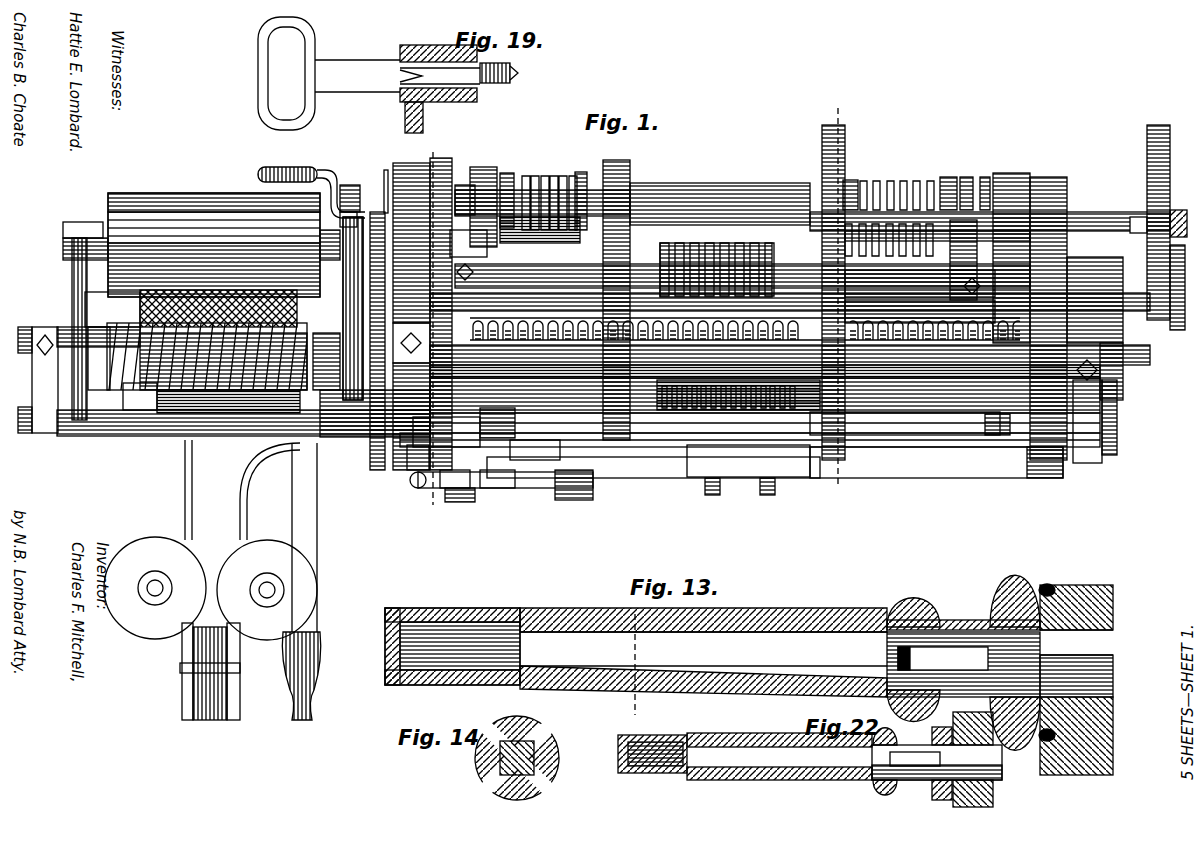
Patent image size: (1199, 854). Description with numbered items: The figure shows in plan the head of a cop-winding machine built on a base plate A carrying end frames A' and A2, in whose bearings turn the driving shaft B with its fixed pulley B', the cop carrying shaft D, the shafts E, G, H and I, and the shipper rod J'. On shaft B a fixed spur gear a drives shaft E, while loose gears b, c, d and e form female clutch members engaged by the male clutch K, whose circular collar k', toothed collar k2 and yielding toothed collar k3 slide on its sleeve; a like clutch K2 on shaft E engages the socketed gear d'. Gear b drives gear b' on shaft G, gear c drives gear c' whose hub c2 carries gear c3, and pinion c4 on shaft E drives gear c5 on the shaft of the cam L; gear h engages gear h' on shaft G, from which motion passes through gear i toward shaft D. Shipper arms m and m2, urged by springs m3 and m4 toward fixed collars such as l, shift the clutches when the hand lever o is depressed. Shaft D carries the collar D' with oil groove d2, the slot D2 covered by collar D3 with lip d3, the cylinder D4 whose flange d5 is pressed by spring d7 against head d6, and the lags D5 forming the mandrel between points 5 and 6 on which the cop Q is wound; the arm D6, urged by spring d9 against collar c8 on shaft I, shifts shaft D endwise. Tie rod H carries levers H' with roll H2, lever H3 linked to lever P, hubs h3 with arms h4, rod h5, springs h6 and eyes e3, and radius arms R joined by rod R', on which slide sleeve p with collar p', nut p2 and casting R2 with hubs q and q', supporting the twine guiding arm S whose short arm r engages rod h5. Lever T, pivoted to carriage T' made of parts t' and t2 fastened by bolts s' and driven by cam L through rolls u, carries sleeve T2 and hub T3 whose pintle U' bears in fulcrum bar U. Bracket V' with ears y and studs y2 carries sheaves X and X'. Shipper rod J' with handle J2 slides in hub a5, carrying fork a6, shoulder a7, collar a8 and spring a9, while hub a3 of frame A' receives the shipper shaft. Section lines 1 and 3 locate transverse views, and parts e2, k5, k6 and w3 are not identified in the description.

In FIG. 1, the base plate A is at (936, 462).
In FIG. 19, the end frame A' is at (425, 82).
In FIG. 1, the end frame A' is at (422, 314).
In FIG. 13, the end frame A' is at (1076, 672).
In FIG. 22, the end frame A' is at (990, 759).
In FIG. 1, the end frame A2 is at (1048, 318).
In FIG. 1, the driving shaft B is at (840, 189).
In FIG. 1, the pulley B' is at (1145, 222).
In FIG. 1, the spur gear wheel c is at (1011, 249).
In FIG. 1, the cop carrying shaft D is at (1057, 368).
In FIG. 13, the cop carrying shaft D is at (703, 652).
In FIG. 14, the cop carrying shaft D is at (545, 758).
In FIG. 1, the collar D' is at (411, 332).
In FIG. 13, the collar D' is at (1015, 655).
In FIG. 22, the collar D' is at (971, 721).
In FIG. 13, the slot D2 is at (943, 658).
In FIG. 22, the slot D2 is at (925, 767).
In FIG. 13, the collar D3 is at (913, 641).
In FIG. 13, the cylinder D4 is at (452, 634).
In FIG. 22, the cylinder D4 is at (652, 739).
In FIG. 13, the lags D5 is at (760, 690).
In FIG. 14, the lags D5 is at (490, 768).
In FIG. 22, the lags D5 is at (779, 768).
In FIG. 1, the arm D6 is at (647, 418).
In FIG. 1, the shaft E is at (889, 249).
In FIG. 1, the shaft G is at (920, 311).
In FIG. 1, the tie rod H is at (765, 369).
In FIG. 1, the two-armed levers H' is at (189, 321).
In FIG. 1, the light roll H2 is at (214, 245).
In FIG. 1, the lever H3 is at (358, 308).
In FIG. 1, the shaft I is at (905, 423).
In FIG. 19, the shipper rod J' is at (506, 72).
In FIG. 1, the shipper rod J' is at (719, 203).
In FIG. 19, the looped handle J2 is at (369, 73).
In FIG. 1, the looped handle J2 is at (311, 181).
In FIG. 1, the male clutch portion K is at (728, 190).
In FIG. 1, the male clutch portion K2 is at (770, 245).
In FIG. 1, the cam L is at (737, 458).
In FIG. 1, the lever P is at (387, 183).
In FIG. 1, the partly finished cop Q is at (208, 308).
In FIG. 1, the radius arm R is at (560, 395).
In FIG. 1, the rod R' is at (750, 451).
In FIG. 1, the casting R2 is at (472, 429).
In FIG. 1, the twine guiding and delivering arm S is at (243, 434).
In FIG. 1, the cylindrical lever T is at (498, 491).
In FIG. 1, the reciprocating carriage T' is at (748, 461).
In FIG. 1, the sleeve T2 is at (558, 497).
In FIG. 1, the hub T3 is at (477, 497).
In FIG. 1, the vertical fulcrum bar U is at (631, 435).
In FIG. 1, the pintle U' is at (497, 421).
In FIG. 1, the bracket V' is at (285, 490).
In FIG. 1, the sheave X is at (215, 674).
In FIG. 1, the sheave X' is at (210, 588).
In FIG. 1, the spur gear wheel a is at (822, 292).
In FIG. 1, the chambered hub a3 is at (738, 402).
In FIG. 19, the hub a5 is at (462, 102).
In FIG. 1, the hub a5 is at (460, 200).
In FIG. 1, the shipper fork a6 is at (1135, 318).
In FIG. 19, the shoulder a7 is at (400, 100).
In FIG. 1, the shoulder a7 is at (611, 418).
In FIG. 1, the collar a8 is at (568, 255).
In FIG. 1, the spring a9 is at (540, 241).
In FIG. 1, the spur gear wheel b is at (860, 134).
In FIG. 1, the gear wheel b' is at (831, 311).
In FIG. 1, the gear c' is at (786, 286).
In FIG. 1, the sleeve-like hub c2 is at (588, 420).
In FIG. 1, the gear wheel c3 is at (1112, 262).
In FIG. 1, the pinion c4 is at (721, 324).
In FIG. 1, the gear wheel c5 is at (984, 424).
In FIG. 1, the collar c8 is at (832, 420).
In FIG. 1, the spur gear wheel d is at (619, 290).
In FIG. 1, the gear d' is at (680, 173).
In FIG. 13, the annular groove d2 is at (1035, 755).
In FIG. 13, the annular lip d3 is at (866, 620).
In FIG. 13, the annular flange d5 is at (496, 696).
In FIG. 22, the annular flange d5 is at (669, 791).
In FIG. 13, the head d6 is at (379, 608).
In FIG. 22, the head d6 is at (602, 740).
In FIG. 13, the coiled spring d7 is at (424, 696).
In FIG. 22, the coiled spring d7 is at (629, 788).
In FIG. 13, the spring d9 is at (955, 620).
In FIG. 22, the spring d9 is at (872, 768).
In FIG. 1, the spur gear wheel e is at (474, 194).
In FIG. 1, the pin e2 is at (322, 395).
In FIG. 1, the eye e3 is at (212, 447).
In FIG. 1, the gear h is at (1136, 410).
In FIG. 1, the gear h' is at (76, 446).
In FIG. 1, the sleeve-like hubs h3 is at (112, 309).
In FIG. 1, the arm h4 is at (99, 358).
In FIG. 1, the rod h5 is at (308, 305).
In FIG. 1, the spiral spring h6 is at (326, 361).
In FIG. 1, the gear i is at (1115, 420).
In FIG. 1, the circular collar k' is at (865, 247).
In FIG. 1, the toothed collar k2 is at (1147, 368).
In FIG. 1, the toothed collar k3 is at (860, 165).
In FIG. 1, the pin k5 is at (337, 455).
In FIG. 1, the rack k6 is at (129, 370).
In FIG. 1, the collar l is at (797, 337).
In FIG. 1, the shipper arm m is at (772, 317).
In FIG. 1, the shipper arm m2 is at (597, 282).
In FIG. 1, the spring m3 is at (746, 323).
In FIG. 1, the spring m4 is at (723, 323).
In FIG. 1, the hand lever o is at (305, 581).
In FIG. 1, the sleeve p is at (270, 487).
In FIG. 1, the collar p' is at (179, 449).
In FIG. 1, the nut p2 is at (97, 447).
In FIG. 1, the cylindrical hub q is at (446, 432).
In FIG. 1, the cylindrical hub q' is at (409, 462).
In FIG. 1, the short arm r is at (211, 398).
In FIG. 1, the bolts s' is at (740, 492).
In FIG. 1, the carriage part t' is at (653, 468).
In FIG. 1, the carriage part t2 is at (769, 457).
In FIG. 1, the rolls u is at (764, 417).
In FIG. 1, the nut w3 is at (465, 504).
In FIG. 1, the ears y is at (240, 676).
In FIG. 1, the stud y2 is at (211, 589).
In FIG. 1, the section line 1 is at (841, 297).
In FIG. 1, the section line 3 is at (426, 330).
In FIG. 13, the point 5 is at (958, 658).
In FIG. 22, the point 5 is at (933, 762).
In FIG. 13, the point 6 is at (635, 666).
In FIG. 22, the point 6 is at (681, 747).